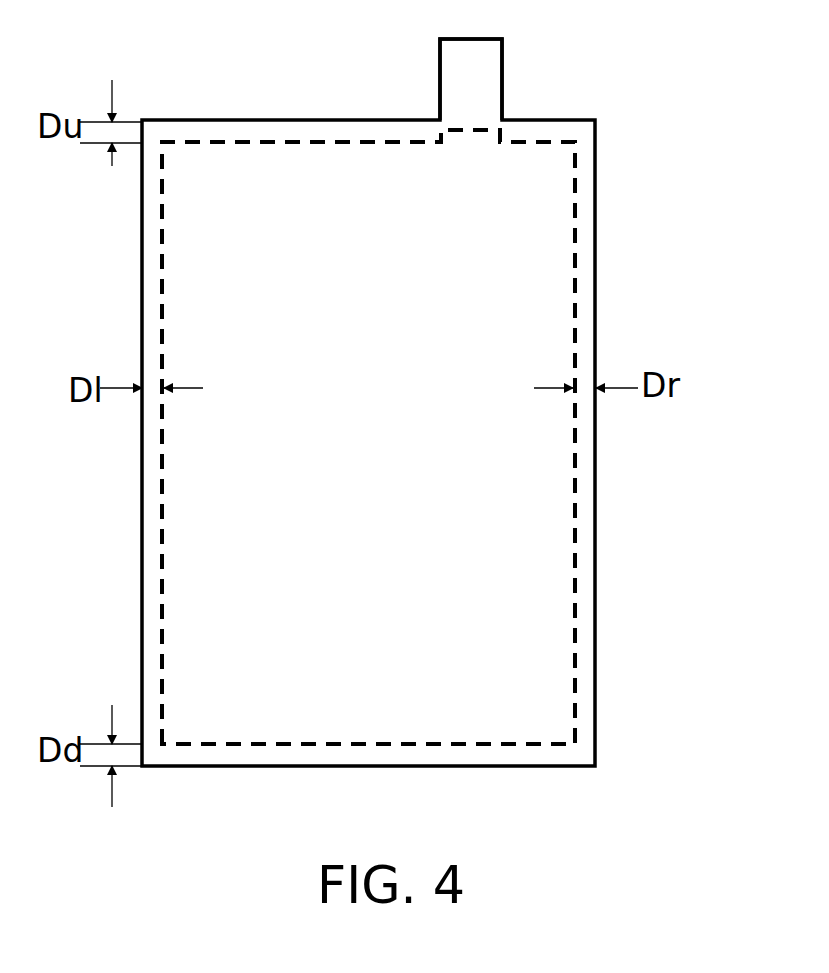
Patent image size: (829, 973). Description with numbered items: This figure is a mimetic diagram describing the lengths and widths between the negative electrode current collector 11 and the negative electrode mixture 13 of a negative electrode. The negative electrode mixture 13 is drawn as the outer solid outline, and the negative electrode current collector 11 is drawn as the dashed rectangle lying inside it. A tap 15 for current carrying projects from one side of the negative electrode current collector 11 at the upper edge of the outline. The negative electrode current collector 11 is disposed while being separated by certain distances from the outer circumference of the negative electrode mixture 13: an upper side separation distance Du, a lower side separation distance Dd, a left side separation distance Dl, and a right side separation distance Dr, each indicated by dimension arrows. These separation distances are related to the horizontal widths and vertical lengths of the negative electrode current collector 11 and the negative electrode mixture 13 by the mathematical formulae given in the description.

The negative electrode current collector 11 is at (575, 317).
The negative electrode mixture 13 is at (594, 192).
The tap 15 is at (502, 70).